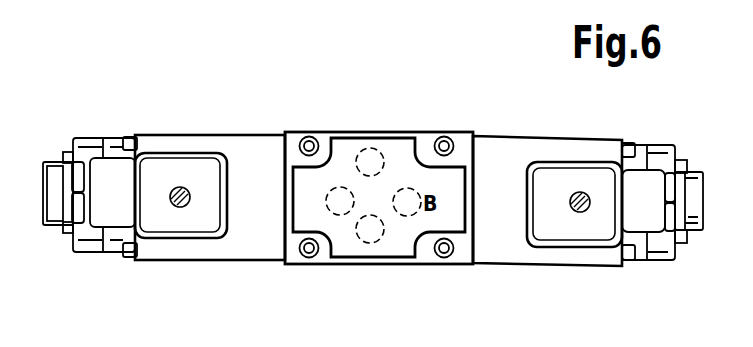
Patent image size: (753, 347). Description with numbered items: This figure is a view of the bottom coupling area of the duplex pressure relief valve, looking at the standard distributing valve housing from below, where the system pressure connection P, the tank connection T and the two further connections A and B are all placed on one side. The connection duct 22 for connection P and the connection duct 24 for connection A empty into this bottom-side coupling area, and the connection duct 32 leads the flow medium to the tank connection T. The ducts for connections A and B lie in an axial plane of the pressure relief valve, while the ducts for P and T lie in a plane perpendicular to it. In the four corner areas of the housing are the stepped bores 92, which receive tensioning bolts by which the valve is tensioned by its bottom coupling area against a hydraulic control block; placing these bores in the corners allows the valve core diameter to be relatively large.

The stepped bores 92 is at (311, 139).
The connection duct 32 is at (372, 148).
The connection duct 24 is at (336, 208).
The connection duct 22 is at (377, 237).